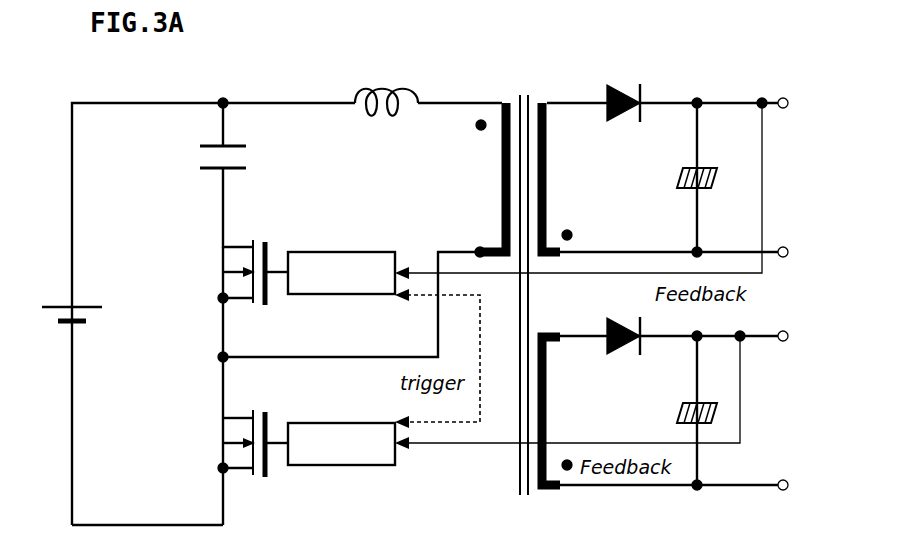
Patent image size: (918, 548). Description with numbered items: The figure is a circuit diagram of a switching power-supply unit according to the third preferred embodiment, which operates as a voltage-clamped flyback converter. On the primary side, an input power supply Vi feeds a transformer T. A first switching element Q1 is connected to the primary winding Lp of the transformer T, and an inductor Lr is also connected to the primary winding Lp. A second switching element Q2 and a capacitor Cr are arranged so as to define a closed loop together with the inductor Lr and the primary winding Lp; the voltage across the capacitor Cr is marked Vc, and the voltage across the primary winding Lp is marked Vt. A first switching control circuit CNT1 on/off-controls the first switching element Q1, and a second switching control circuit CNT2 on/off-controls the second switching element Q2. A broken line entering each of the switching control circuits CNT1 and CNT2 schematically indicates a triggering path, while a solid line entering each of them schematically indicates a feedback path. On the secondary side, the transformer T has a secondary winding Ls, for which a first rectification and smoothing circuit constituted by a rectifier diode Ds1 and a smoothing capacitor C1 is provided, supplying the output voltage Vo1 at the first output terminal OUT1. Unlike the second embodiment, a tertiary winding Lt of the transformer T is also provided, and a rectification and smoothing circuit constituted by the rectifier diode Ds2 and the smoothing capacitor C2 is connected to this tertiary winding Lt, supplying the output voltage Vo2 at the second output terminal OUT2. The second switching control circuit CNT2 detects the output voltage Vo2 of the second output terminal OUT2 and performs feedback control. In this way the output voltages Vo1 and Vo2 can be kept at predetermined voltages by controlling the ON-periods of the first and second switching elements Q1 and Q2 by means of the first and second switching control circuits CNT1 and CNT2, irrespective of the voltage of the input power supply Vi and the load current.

The input power supply Vi is at (56, 315).
The capacitor Cr is at (207, 158).
The capacitor voltage Vc is at (272, 157).
The first switching element Q1 is at (232, 443).
The second switching element Q2 is at (232, 272).
The first switching control circuit CNT1 is at (341, 444).
The second switching control circuit CNT2 is at (341, 273).
The inductor Lr is at (386, 85).
The transformer T is at (523, 93).
The primary winding Lp is at (487, 180).
The transformer voltage Vt is at (451, 185).
The tertiary winding Lt is at (562, 177).
The secondary winding Ls is at (561, 411).
The rectifier diode Ds1 is at (620, 321).
The rectifier diode Ds2 is at (620, 88).
The smoothing capacitor C1 is at (677, 410).
The smoothing capacitor C2 is at (677, 177).
The first output terminal OUT1 is at (815, 408).
The second output terminal OUT2 is at (815, 175).
The output voltage Vo1 is at (762, 412).
The output voltage Vo2 is at (736, 178).